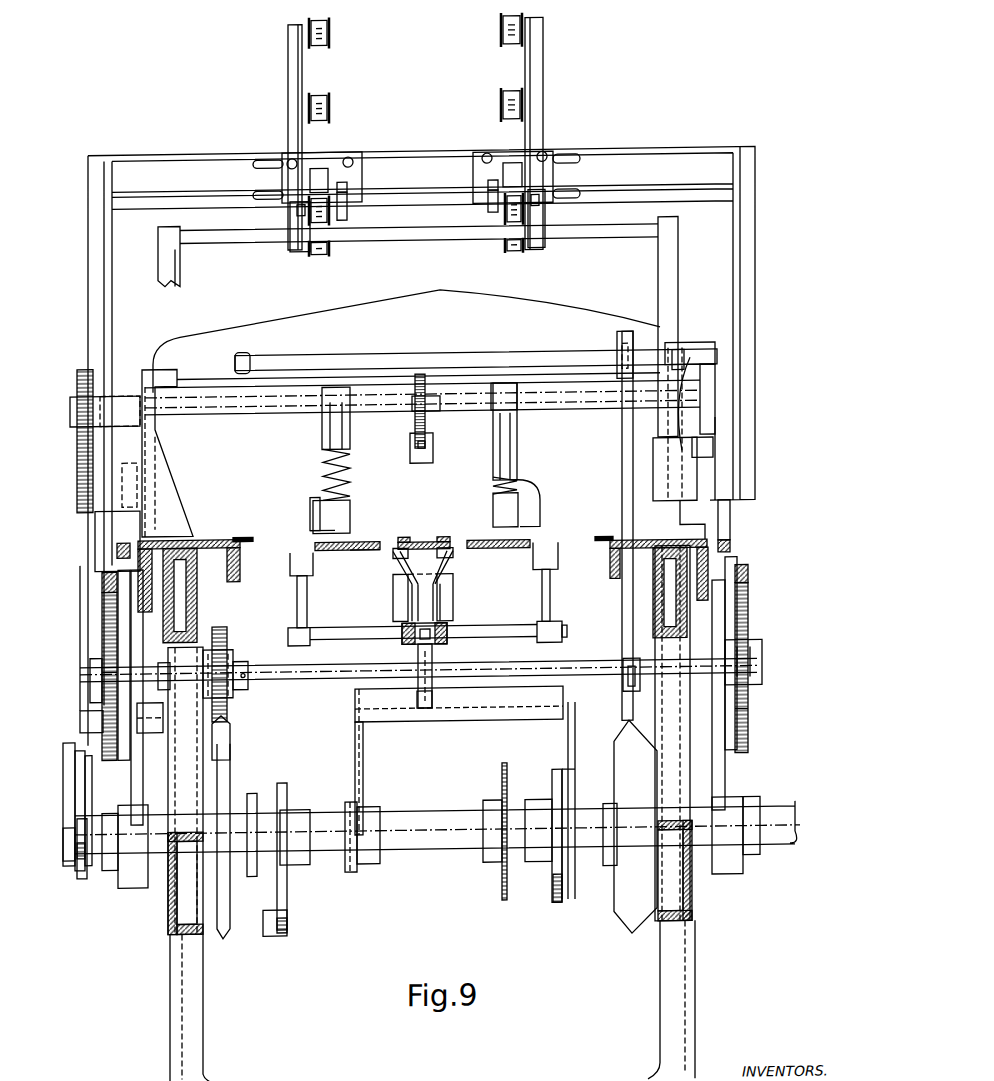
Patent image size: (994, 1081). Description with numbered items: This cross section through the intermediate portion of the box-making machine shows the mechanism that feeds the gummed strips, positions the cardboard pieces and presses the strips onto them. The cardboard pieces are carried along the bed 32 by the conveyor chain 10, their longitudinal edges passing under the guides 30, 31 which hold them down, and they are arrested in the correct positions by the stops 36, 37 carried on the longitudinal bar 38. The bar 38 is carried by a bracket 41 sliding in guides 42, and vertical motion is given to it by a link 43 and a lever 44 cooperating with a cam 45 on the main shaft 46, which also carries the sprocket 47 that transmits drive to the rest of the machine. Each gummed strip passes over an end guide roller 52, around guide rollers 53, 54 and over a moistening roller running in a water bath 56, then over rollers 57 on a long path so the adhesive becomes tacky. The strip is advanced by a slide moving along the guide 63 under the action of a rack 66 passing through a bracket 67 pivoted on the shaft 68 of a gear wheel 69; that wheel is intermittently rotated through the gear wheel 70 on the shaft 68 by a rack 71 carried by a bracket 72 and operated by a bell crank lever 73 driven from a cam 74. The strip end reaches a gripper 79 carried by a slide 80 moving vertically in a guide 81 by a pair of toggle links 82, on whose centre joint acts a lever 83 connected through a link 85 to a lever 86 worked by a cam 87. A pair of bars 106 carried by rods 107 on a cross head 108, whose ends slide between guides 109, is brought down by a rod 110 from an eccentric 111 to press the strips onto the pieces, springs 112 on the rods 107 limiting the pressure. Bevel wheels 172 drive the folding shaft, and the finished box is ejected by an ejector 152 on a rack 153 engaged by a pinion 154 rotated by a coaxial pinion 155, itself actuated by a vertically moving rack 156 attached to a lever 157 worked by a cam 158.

The end guide roller 52 is at (330, 41).
The rollers 57 is at (330, 104).
The water bath 56 is at (343, 198).
The guide roller 54 is at (325, 210).
The guide roller 53 is at (323, 253).
The cross head 108 is at (320, 322).
The pinion 154 is at (425, 375).
The coaxial pinion 155 is at (97, 410).
The vertically moving rack 156 is at (80, 467).
The guides 109 is at (140, 450).
The rack 153 is at (417, 443).
The ejector 152 is at (433, 447).
The slide 80 is at (507, 443).
The rods 107 is at (323, 470).
The springs 112 is at (312, 513).
The bars 106 is at (347, 510).
The link 85 is at (622, 487).
The guide 81 is at (658, 466).
The toggle links 82 is at (688, 430).
The lever 83 is at (660, 437).
The guide 63 is at (120, 544).
The guide 30 is at (422, 526).
The conveyor chain 10 is at (283, 545).
The stop 36 is at (308, 543).
The stop 37 is at (407, 538).
The guide 31 is at (447, 540).
The gripper 79 is at (317, 560).
The bed 32 is at (347, 548).
The rack 66 is at (102, 583).
The bracket 67 is at (100, 629).
The gear wheel 69 is at (107, 667).
The rod 110 is at (135, 628).
The rack 71 is at (227, 632).
The gear wheel 70 is at (223, 665).
The shaft 68 is at (283, 672).
The bracket 72 is at (230, 703).
The bevel wheels 172 is at (235, 758).
The cam 158 is at (80, 770).
The lever 157 is at (92, 797).
The eccentric 111 is at (132, 878).
The bell crank lever 73 is at (225, 895).
The cam 74 is at (287, 880).
The cam 45 is at (350, 872).
The main shaft 46 is at (431, 850).
The sprocket 47 is at (503, 887).
The cam 87 is at (552, 772).
The lever 86 is at (613, 790).
The link 43 is at (420, 687).
The lever 44 is at (363, 742).
The bracket 41 is at (403, 605).
The guides 42 is at (450, 592).
The longitudinal bar 38 is at (428, 637).